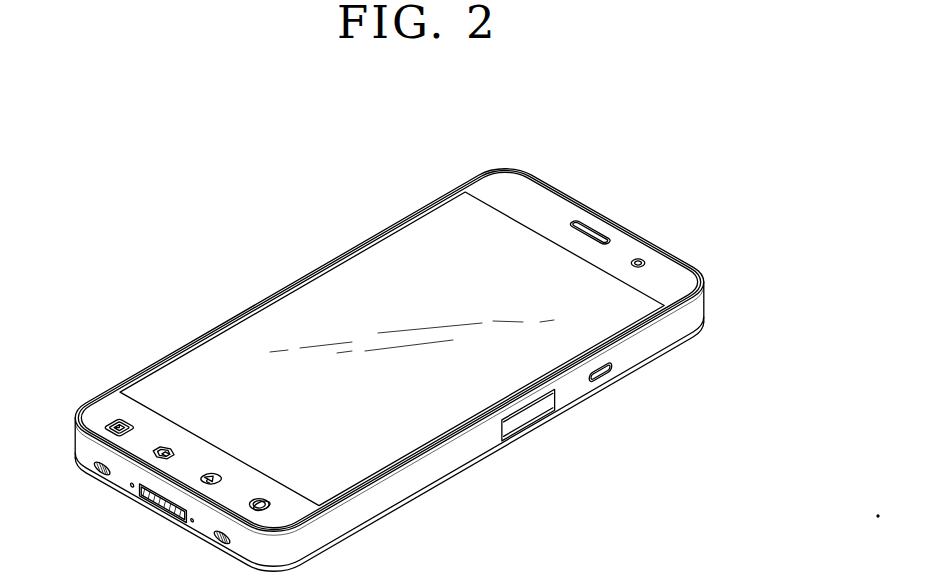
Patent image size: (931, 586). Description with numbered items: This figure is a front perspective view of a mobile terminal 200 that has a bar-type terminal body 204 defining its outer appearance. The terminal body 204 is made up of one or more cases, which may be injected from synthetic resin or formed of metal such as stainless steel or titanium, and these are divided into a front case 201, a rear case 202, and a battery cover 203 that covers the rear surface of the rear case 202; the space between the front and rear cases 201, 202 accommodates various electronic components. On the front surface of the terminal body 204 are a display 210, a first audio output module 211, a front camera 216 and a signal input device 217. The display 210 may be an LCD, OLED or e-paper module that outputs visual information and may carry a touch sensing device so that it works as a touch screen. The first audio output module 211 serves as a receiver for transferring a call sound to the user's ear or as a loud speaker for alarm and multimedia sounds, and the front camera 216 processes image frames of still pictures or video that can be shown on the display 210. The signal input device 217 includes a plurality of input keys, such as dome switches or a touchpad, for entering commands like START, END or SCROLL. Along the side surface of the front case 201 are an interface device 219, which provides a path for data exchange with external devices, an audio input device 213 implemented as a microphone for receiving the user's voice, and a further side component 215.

The mobile terminal 200 is at (234, 258).
The front case 201 is at (706, 279).
The rear case 202 is at (704, 305).
The battery cover 203 is at (790, 259).
The terminal body 204 is at (451, 376).
The display 210 is at (372, 283).
The first audio output module 211 is at (595, 231).
The audio input device 213 is at (128, 488).
The interface unit (card slot) 215 is at (531, 418).
The front camera 216 is at (642, 259).
The signal input device 217 is at (117, 419).
The interface device 219 is at (173, 508).